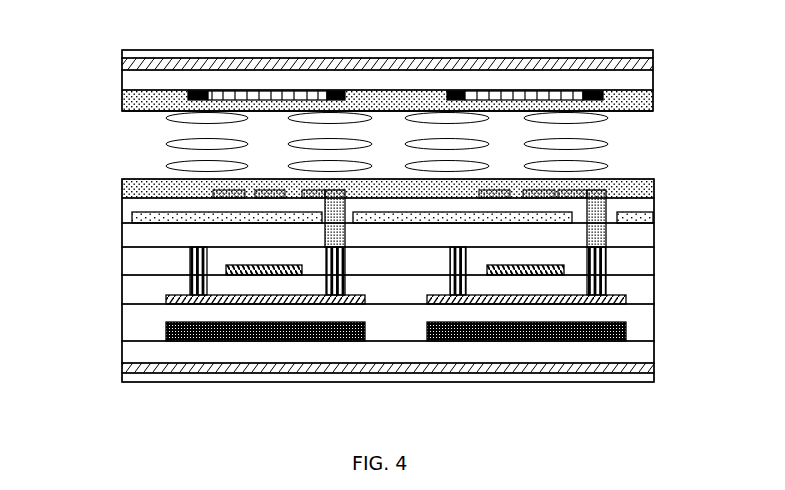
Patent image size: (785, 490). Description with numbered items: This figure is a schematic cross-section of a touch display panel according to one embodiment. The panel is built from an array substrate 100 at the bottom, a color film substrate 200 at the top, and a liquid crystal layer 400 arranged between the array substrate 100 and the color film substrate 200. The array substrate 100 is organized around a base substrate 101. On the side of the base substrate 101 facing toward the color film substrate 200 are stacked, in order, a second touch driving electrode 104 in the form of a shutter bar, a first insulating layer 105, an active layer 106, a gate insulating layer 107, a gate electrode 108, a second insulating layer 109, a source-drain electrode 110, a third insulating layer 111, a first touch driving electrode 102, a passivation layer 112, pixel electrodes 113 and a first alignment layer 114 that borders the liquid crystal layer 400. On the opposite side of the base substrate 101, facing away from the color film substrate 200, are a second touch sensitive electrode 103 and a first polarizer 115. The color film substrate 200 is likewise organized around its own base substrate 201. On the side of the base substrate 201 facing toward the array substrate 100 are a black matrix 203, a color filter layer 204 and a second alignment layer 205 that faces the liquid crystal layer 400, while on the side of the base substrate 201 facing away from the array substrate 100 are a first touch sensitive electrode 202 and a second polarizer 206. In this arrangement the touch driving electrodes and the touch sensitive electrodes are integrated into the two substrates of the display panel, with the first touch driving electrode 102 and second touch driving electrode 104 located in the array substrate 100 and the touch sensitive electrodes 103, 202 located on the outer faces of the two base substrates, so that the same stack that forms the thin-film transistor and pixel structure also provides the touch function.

The array substrate 100 is at (100, 352).
The base substrate 101 is at (637, 353).
The first touch driving electrode 102 is at (654, 218).
The second touch sensitive electrode 103 is at (652, 369).
The second touch driving electrode (shutter bar) 104 is at (626, 330).
The first insulating layer 105 is at (637, 310).
The active layer 106 is at (166, 299).
The gate insulating layer 107 is at (632, 280).
The gate electrode 108 is at (226, 270).
The second insulating layer 109 is at (632, 258).
The source-drain electrode 110 is at (190, 257).
The third insulating layer 111 is at (629, 236).
The passivation layer 112 is at (638, 203).
The pixel electrodes 113 is at (602, 180).
The first alignment layer 114 is at (654, 182).
The first polarizer 115 is at (634, 378).
The color film substrate 200 is at (100, 82).
The base substrate 201 is at (642, 82).
The first touch sensitive electrode 202 is at (642, 67).
The black matrix 203 is at (655, 100).
The color filter layer 204 is at (557, 91).
The second alignment layer 205 is at (652, 111).
The second polarizer 206 is at (642, 53).
The liquid crystal layer 400 is at (144, 147).